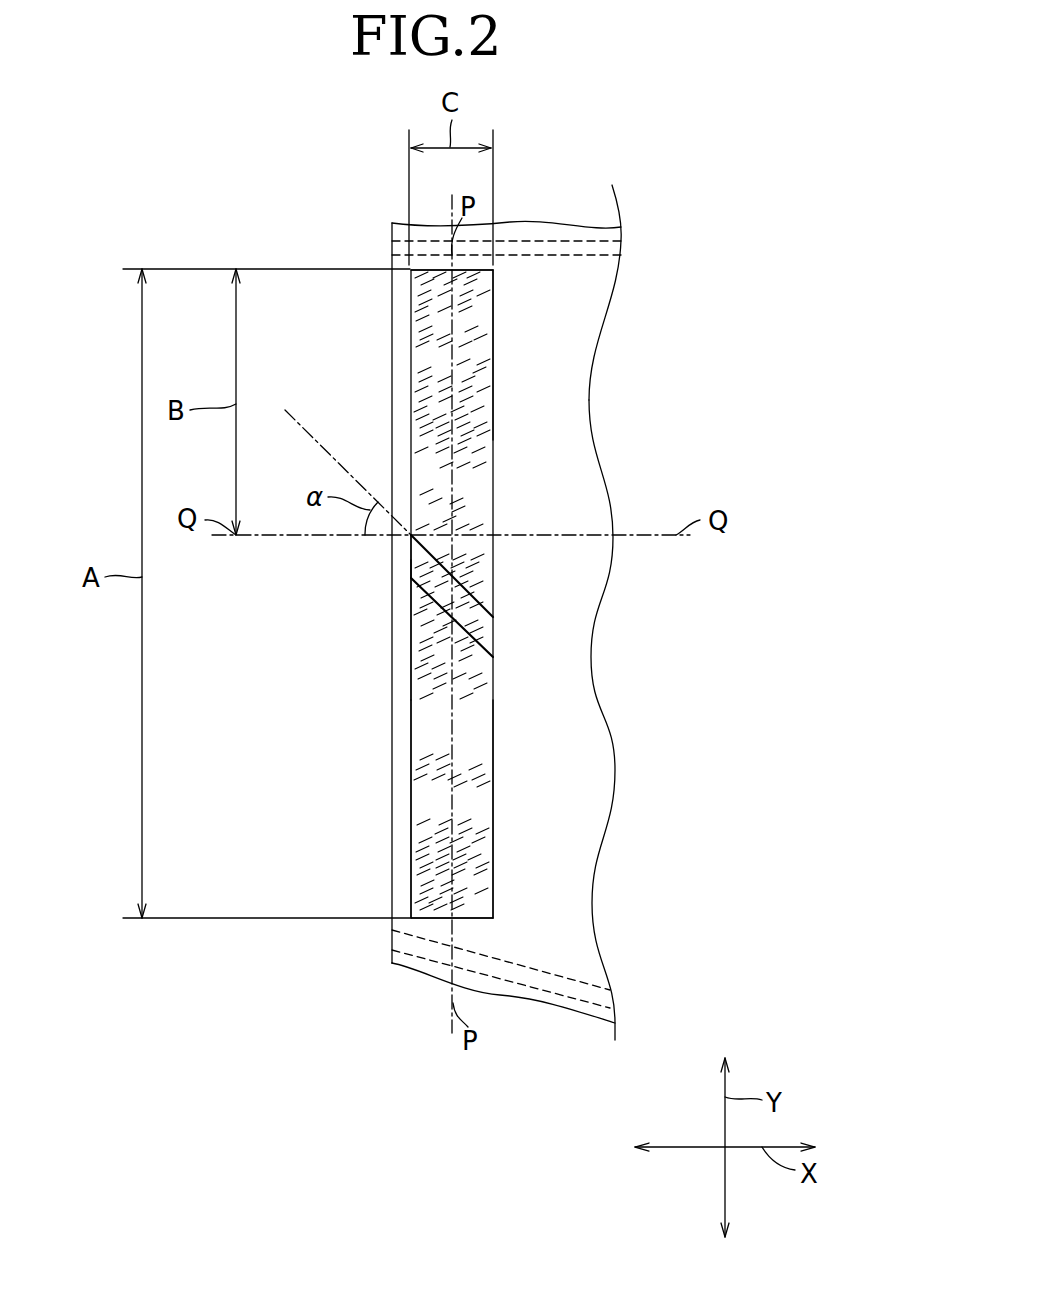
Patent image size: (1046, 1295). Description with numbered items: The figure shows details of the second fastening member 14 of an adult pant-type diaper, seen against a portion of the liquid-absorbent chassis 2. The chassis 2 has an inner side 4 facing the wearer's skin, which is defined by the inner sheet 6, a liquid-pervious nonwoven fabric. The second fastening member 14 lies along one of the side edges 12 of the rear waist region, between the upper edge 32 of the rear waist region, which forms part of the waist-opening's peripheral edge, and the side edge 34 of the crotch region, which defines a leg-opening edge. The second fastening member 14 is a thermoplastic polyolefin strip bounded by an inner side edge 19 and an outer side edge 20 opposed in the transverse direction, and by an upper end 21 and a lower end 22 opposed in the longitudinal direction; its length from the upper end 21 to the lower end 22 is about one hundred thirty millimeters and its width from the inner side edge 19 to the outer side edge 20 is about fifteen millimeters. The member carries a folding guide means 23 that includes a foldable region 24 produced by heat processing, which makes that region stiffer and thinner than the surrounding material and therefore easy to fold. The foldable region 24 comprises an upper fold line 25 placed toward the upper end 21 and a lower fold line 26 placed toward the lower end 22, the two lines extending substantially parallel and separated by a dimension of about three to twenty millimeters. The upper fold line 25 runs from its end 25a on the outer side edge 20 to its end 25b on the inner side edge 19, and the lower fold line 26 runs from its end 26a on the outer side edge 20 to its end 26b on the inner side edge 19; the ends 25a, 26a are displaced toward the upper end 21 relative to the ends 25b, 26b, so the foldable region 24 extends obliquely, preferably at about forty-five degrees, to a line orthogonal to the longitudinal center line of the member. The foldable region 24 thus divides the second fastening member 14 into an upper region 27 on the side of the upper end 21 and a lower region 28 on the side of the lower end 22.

The liquid-absorbent chassis 2 is at (580, 1003).
The inner side 4 is at (561, 953).
The inner sheet 6 is at (570, 878).
The side edges of the rear waist region 12 is at (430, 955).
The second fastening member 14 is at (398, 774).
The inner side edge 19 is at (494, 372).
The outer side edge 20 is at (410, 672).
The upper end 21 is at (428, 268).
The lower end 22 is at (428, 918).
The folding guide means 23 is at (440, 607).
The foldable region 24 is at (430, 573).
The upper fold line 25 is at (494, 598).
The end of the upper fold line on the outer side edge 25a is at (405, 540).
The end of the upper fold line on the inner side edge 25b is at (500, 618).
The lower fold line 26 is at (430, 596).
The end of the lower fold line on the outer side edge 26a is at (407, 575).
The end of the lower fold line on the inner side edge 26b is at (493, 655).
The upper region 27 is at (482, 304).
The lower region 28 is at (480, 790).
The upper edge of the rear waist region 32 is at (535, 224).
The side edges of the crotch region 34 is at (530, 1003).